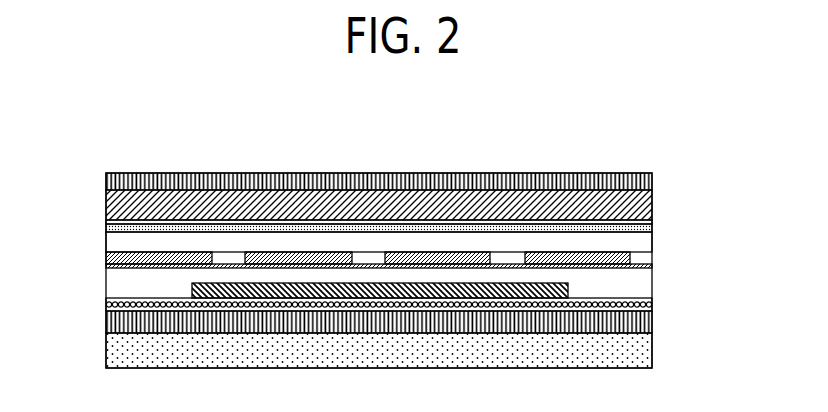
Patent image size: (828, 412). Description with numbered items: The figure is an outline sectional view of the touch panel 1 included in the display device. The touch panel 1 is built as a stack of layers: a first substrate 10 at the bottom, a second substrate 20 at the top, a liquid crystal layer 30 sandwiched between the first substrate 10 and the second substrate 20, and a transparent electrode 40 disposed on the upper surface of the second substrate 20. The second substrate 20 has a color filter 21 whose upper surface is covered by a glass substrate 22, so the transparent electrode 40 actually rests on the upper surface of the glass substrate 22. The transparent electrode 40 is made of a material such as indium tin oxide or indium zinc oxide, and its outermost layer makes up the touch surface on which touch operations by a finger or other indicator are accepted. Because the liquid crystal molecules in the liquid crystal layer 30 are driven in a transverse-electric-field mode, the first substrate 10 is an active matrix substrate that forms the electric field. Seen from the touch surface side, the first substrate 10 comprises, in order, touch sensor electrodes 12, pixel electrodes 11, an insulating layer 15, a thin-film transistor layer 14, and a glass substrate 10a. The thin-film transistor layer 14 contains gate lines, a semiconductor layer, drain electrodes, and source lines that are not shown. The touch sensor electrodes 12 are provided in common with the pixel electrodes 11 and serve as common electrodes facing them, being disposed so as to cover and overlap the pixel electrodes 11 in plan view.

The touch panel 1 is at (623, 172).
The first substrate 10 is at (333, 307).
The glass substrate 10a is at (106, 348).
The pixel electrodes 11 is at (192, 285).
The touch sensor electrodes 12 is at (106, 263).
The thin-film transistor layer 14 is at (106, 326).
The insulating layer 15 is at (106, 303).
The second substrate 20 is at (416, 214).
The color filter 21 is at (697, 197).
The glass substrate 22 is at (652, 197).
The liquid crystal layer 30 is at (643, 244).
The transparent electrode 40 is at (652, 174).